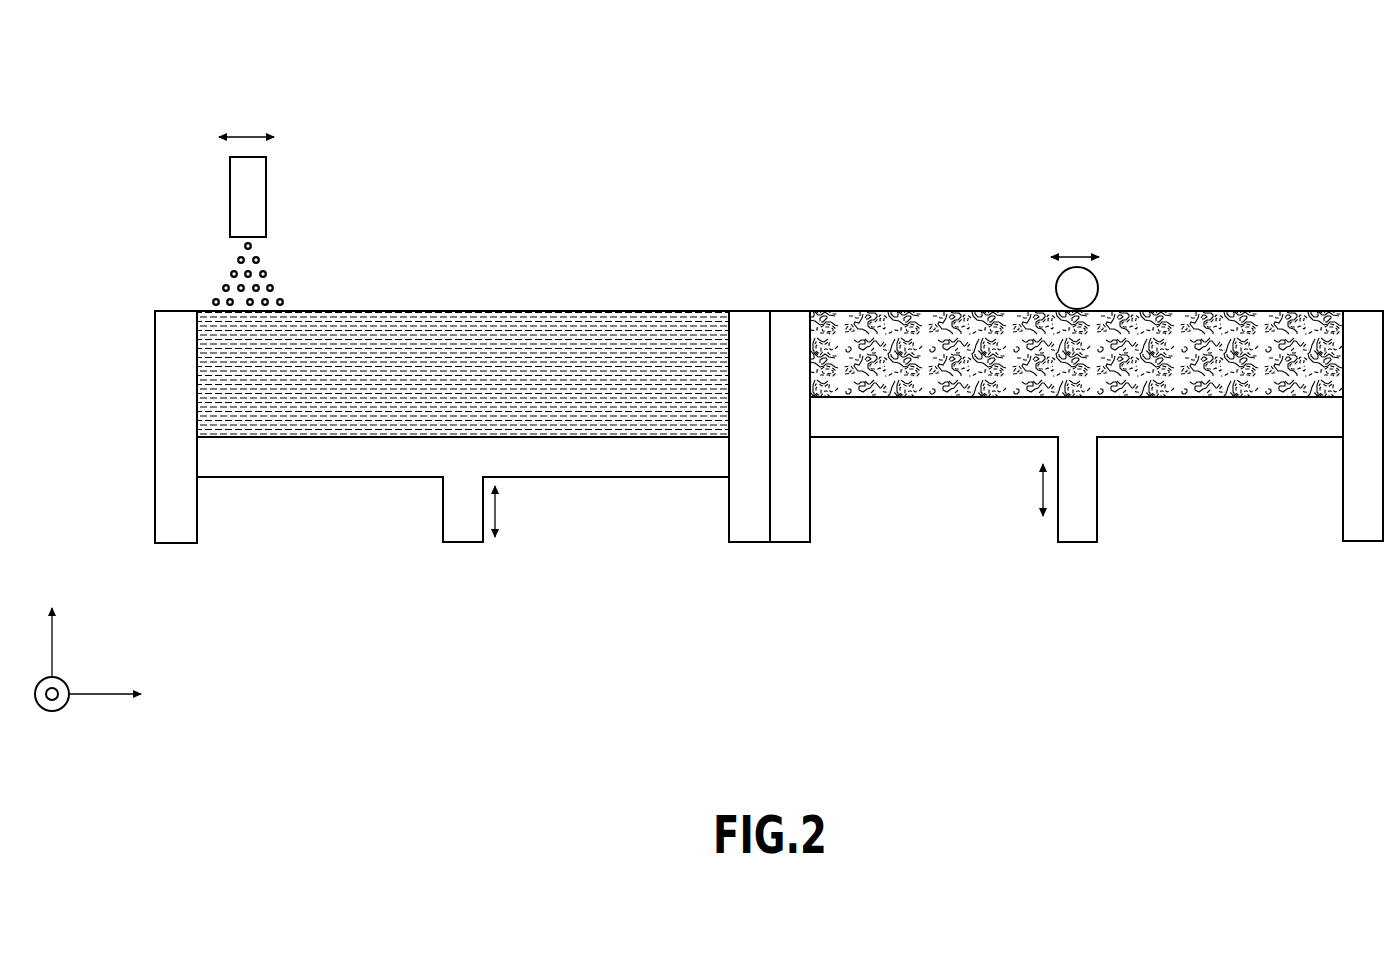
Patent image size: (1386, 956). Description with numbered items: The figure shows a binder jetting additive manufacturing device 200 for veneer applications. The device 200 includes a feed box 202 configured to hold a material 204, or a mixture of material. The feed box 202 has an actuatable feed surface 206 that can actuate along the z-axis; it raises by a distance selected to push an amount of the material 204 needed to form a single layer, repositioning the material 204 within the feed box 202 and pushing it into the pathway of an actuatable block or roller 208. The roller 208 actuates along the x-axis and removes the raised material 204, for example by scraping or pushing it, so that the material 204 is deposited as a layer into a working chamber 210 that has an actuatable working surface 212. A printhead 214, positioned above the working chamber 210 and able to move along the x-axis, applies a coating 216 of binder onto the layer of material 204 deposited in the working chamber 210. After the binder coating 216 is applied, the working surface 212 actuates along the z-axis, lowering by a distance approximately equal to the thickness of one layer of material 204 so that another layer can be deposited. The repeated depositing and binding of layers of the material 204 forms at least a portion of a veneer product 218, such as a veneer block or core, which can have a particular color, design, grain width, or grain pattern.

The binder jetting additive manufacturing device 200 is at (184, 62).
The feed box 202 is at (810, 512).
The material 204 is at (1215, 425).
The actuatable feed surface 206 is at (1253, 318).
The actuatable block or roller 208 is at (1095, 297).
The working chamber 210 is at (729, 520).
The actuatable working surface 212 is at (327, 463).
The printhead 214 is at (235, 274).
The coating 216 is at (232, 196).
The veneer product 218 is at (463, 318).